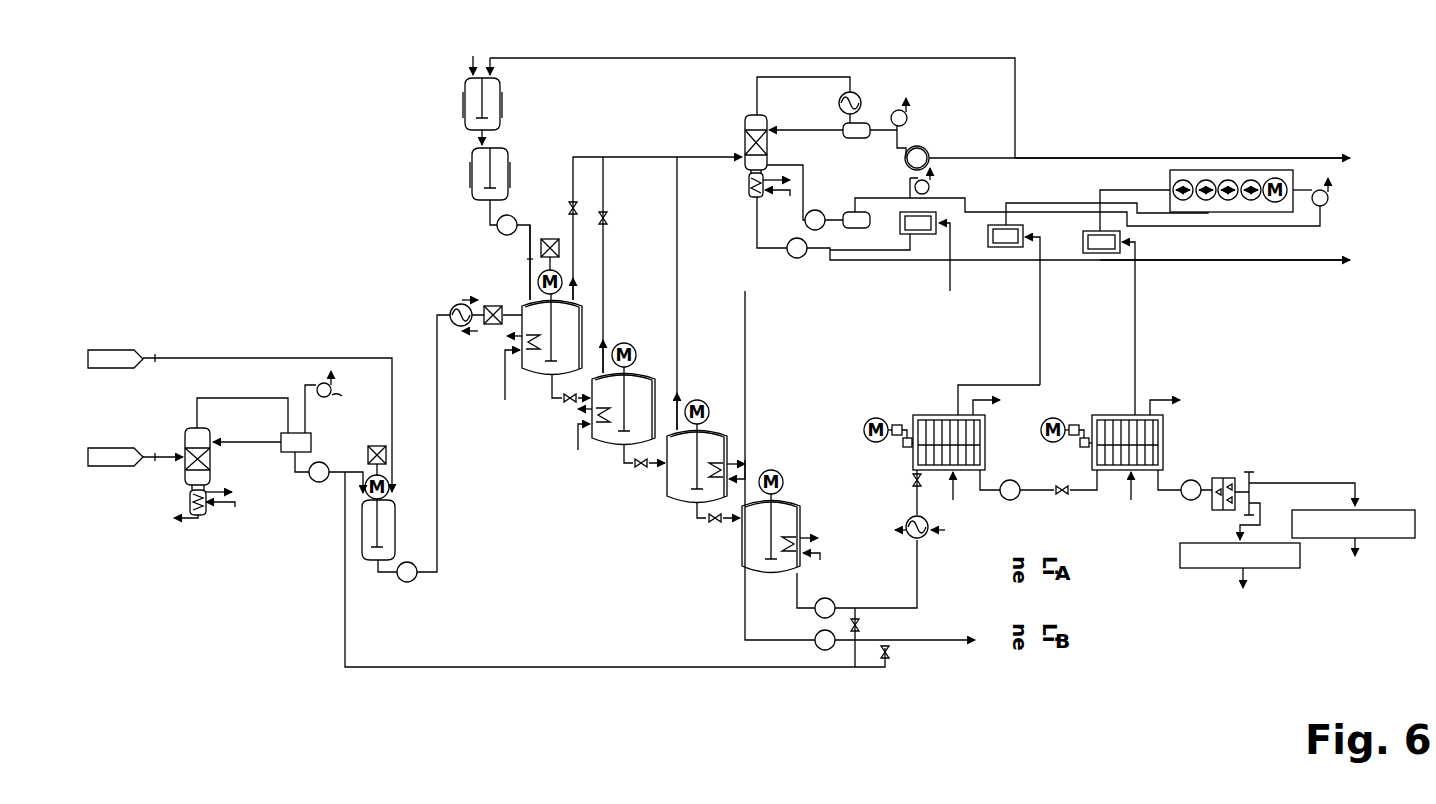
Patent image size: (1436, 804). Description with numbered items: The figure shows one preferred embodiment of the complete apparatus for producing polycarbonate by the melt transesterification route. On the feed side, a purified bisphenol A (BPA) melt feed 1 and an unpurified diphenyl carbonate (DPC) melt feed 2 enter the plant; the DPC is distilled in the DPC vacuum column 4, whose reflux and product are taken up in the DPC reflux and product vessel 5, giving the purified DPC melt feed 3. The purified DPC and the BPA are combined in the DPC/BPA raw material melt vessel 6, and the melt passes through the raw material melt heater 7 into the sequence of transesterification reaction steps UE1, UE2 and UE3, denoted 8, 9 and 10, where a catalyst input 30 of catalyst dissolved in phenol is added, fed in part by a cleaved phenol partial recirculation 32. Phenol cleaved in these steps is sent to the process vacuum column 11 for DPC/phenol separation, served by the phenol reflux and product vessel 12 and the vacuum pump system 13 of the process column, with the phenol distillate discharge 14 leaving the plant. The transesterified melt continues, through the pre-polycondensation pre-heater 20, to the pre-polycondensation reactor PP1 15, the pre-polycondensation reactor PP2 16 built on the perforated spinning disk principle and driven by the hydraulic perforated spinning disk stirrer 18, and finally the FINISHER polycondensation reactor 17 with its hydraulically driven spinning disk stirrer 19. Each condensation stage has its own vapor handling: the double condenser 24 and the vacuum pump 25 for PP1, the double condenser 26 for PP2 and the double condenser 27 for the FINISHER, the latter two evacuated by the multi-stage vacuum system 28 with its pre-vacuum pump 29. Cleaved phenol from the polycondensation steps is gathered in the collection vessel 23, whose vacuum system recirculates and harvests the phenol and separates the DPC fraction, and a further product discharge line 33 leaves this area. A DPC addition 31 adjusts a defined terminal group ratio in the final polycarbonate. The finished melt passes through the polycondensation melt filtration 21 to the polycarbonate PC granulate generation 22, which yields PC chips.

The bisphenol A (BPA) melt feed 1 is at (156, 362).
The diphenyl carbonate (DPC) melt feed 2 is at (156, 461).
The purified diphenyl carbonate (DPC) melt feed 3 is at (210, 398).
The DPC vacuum column 4 is at (210, 432).
The DPC reflux and product vessel 5 is at (311, 443).
The DPC/BPA raw material melt vessel 6 is at (396, 507).
The raw material melt heater 7 is at (453, 308).
The transesterification reaction step UE1 8 is at (579, 302).
The transesterification reaction step UE2 9 is at (649, 375).
The transesterification reaction step UE3 10 is at (723, 433).
The process vacuum column 11 is at (744, 131).
The phenol reflux and product vessel 12 is at (856, 138).
The vacuum pump system, process column 13 is at (907, 121).
The phenol distillate discharge 14 is at (1328, 157).
The pre-polycondensation reactor PP1 15 is at (799, 503).
The pre-polycondensation reactor PP2 16 is at (943, 415).
The FINISHER polycondensation reactor 17 is at (1120, 415).
The PP2 perforated spinning disk stirrer, hydraulic drive 18 is at (897, 423).
The FINISHER spinning disk stirrer, hydraulic drive 19 is at (1078, 423).
The pre-polycondensation pre-heater 20 is at (908, 521).
The polycondensation melt filtration 21 is at (1227, 478).
The polycarbonate PC granulate generation 22 is at (1191, 569).
The collection vessel for cleaved phenol 23 is at (857, 229).
The double condenser, PP1 24 is at (926, 234).
The vacuum pump, PP1 25 is at (929, 190).
The double condenser, PP2 26 is at (1008, 248).
The double condenser, FINISHER 27 is at (1100, 253).
The multi-stage vacuum system 28 is at (1230, 170).
The pre-vacuum pump 29 is at (1327, 204).
The catalyst input 30 is at (528, 264).
The DPC addition 31 is at (862, 626).
The cleaved phenol partial recirculation 32 is at (500, 82).
The discharge line 33 is at (1329, 264).